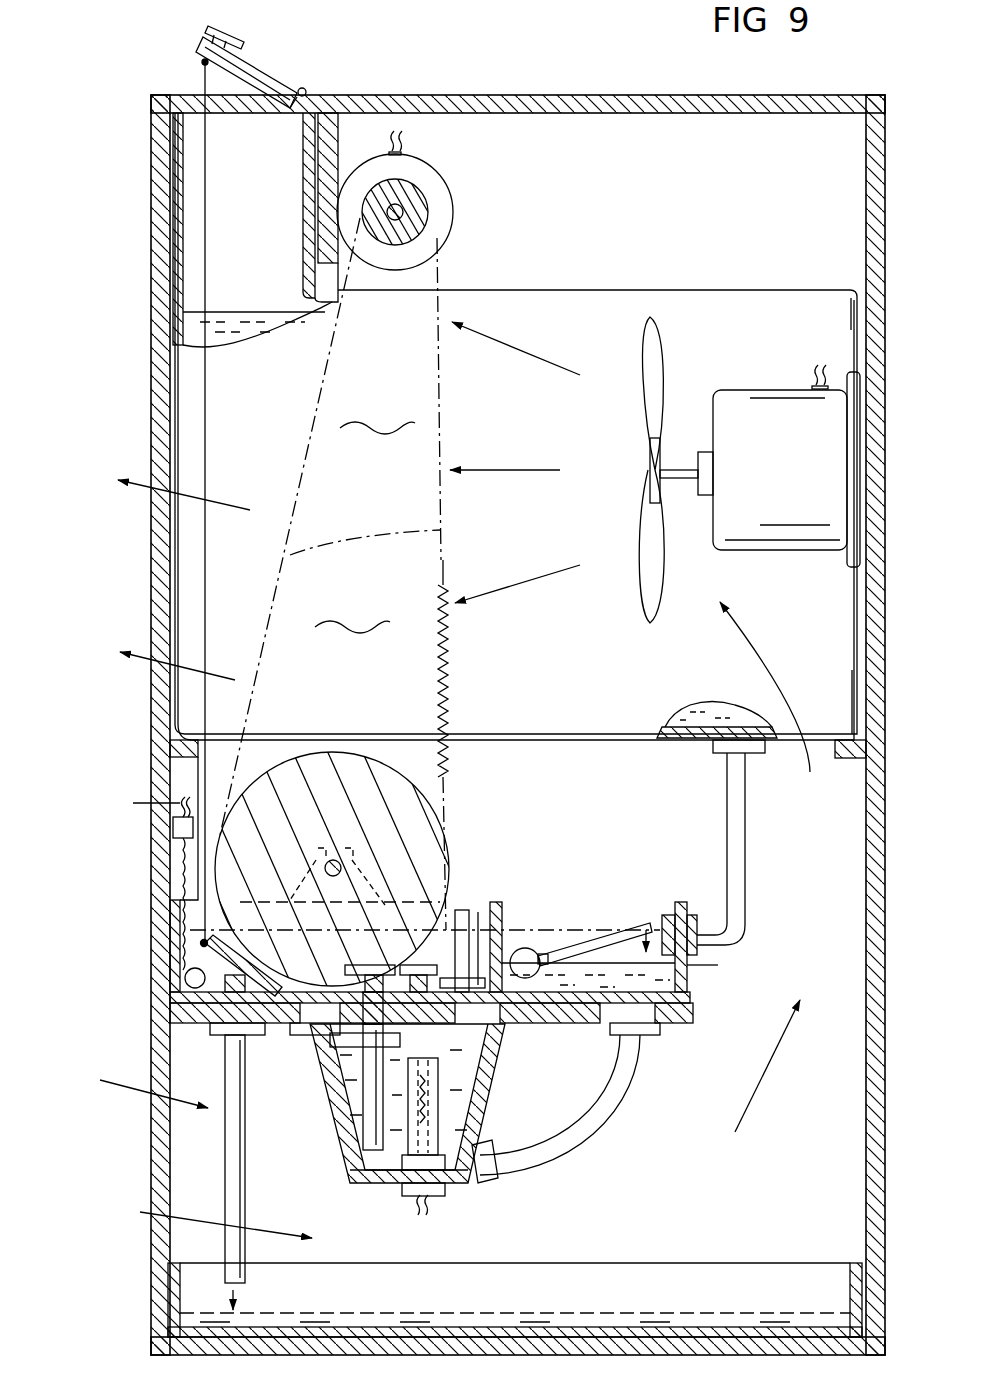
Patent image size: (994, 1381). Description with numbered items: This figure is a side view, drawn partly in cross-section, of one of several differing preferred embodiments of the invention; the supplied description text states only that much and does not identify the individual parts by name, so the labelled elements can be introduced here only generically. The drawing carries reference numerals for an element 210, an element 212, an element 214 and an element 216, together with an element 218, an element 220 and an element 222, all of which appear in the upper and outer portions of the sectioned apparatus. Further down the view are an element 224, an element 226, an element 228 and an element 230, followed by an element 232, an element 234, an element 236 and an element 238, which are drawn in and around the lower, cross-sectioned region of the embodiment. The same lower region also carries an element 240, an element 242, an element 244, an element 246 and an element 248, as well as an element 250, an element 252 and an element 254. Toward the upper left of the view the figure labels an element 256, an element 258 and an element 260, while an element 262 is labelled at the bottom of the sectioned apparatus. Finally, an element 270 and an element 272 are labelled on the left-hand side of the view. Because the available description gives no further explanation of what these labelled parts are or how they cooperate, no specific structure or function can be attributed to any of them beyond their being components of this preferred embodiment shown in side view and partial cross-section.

The drive belt 210 is at (290, 555).
The drive pulley 212 is at (452, 213).
The air flow 214 is at (520, 480).
The fan and motor 216 is at (657, 372).
The cabinet 218 is at (162, 1196).
The louvered panel 220 is at (158, 468).
The water 222 is at (190, 332).
The float tank 224 is at (482, 922).
The evaporator wheel 226 is at (407, 783).
The float valve 228 is at (605, 926).
The water supply pipe 230 is at (745, 899).
The base plate 232 is at (555, 1005).
The connecting pipe 234 is at (603, 1136).
The reservoir cup 236 is at (334, 1102).
The water in cup 238 is at (456, 1080).
The heater element 240 is at (440, 1105).
The bolt 242 is at (400, 976).
The overflow tube 244 is at (373, 1032).
The shaft bracket 246 is at (335, 978).
The cup bottom 248 is at (372, 1152).
The standpipe 250 is at (465, 906).
The drain pipe 252 is at (233, 1005).
The float arm 254 is at (255, 980).
The damper rod 256 is at (201, 125).
The damper 258 is at (250, 64).
The water tank 260 is at (207, 212).
The drip tray 262 is at (448, 1326).
The float 270 is at (190, 976).
The switch 272 is at (183, 828).